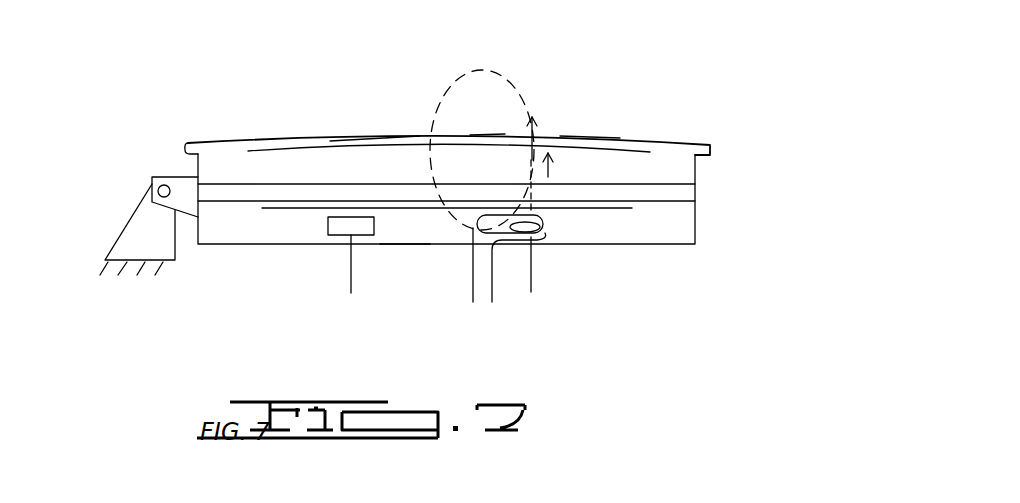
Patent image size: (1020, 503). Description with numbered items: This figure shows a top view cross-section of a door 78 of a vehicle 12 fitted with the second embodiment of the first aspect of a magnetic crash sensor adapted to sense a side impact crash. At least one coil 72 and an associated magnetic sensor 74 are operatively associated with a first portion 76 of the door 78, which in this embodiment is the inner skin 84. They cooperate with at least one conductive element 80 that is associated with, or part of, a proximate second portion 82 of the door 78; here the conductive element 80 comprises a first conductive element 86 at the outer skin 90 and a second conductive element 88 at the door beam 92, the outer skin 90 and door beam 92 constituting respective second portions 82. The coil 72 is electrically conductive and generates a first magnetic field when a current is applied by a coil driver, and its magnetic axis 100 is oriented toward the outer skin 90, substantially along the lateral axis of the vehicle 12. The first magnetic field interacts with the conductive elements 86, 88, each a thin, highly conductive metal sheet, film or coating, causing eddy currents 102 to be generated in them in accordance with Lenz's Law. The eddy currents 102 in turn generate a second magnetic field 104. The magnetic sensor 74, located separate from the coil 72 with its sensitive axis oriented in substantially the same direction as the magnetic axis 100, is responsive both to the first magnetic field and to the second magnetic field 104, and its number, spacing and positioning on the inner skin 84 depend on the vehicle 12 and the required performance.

The vehicle 12 is at (131, 90).
The coil 72 is at (543, 232).
The magnetic sensor 74 is at (340, 235).
The first portion 76 is at (405, 271).
The door 78 is at (248, 279).
The conductive element 80 is at (495, 161).
The second portion 82 is at (388, 165).
The inner skin 84 is at (658, 245).
The first conductive element 86 is at (645, 151).
The second conductive element 88 is at (632, 209).
The outer skin 90 is at (487, 136).
The door beam 92 is at (673, 184).
The magnetic axis 100 is at (529, 277).
The eddy currents 102 is at (549, 177).
The second magnetic field 104 is at (463, 73).